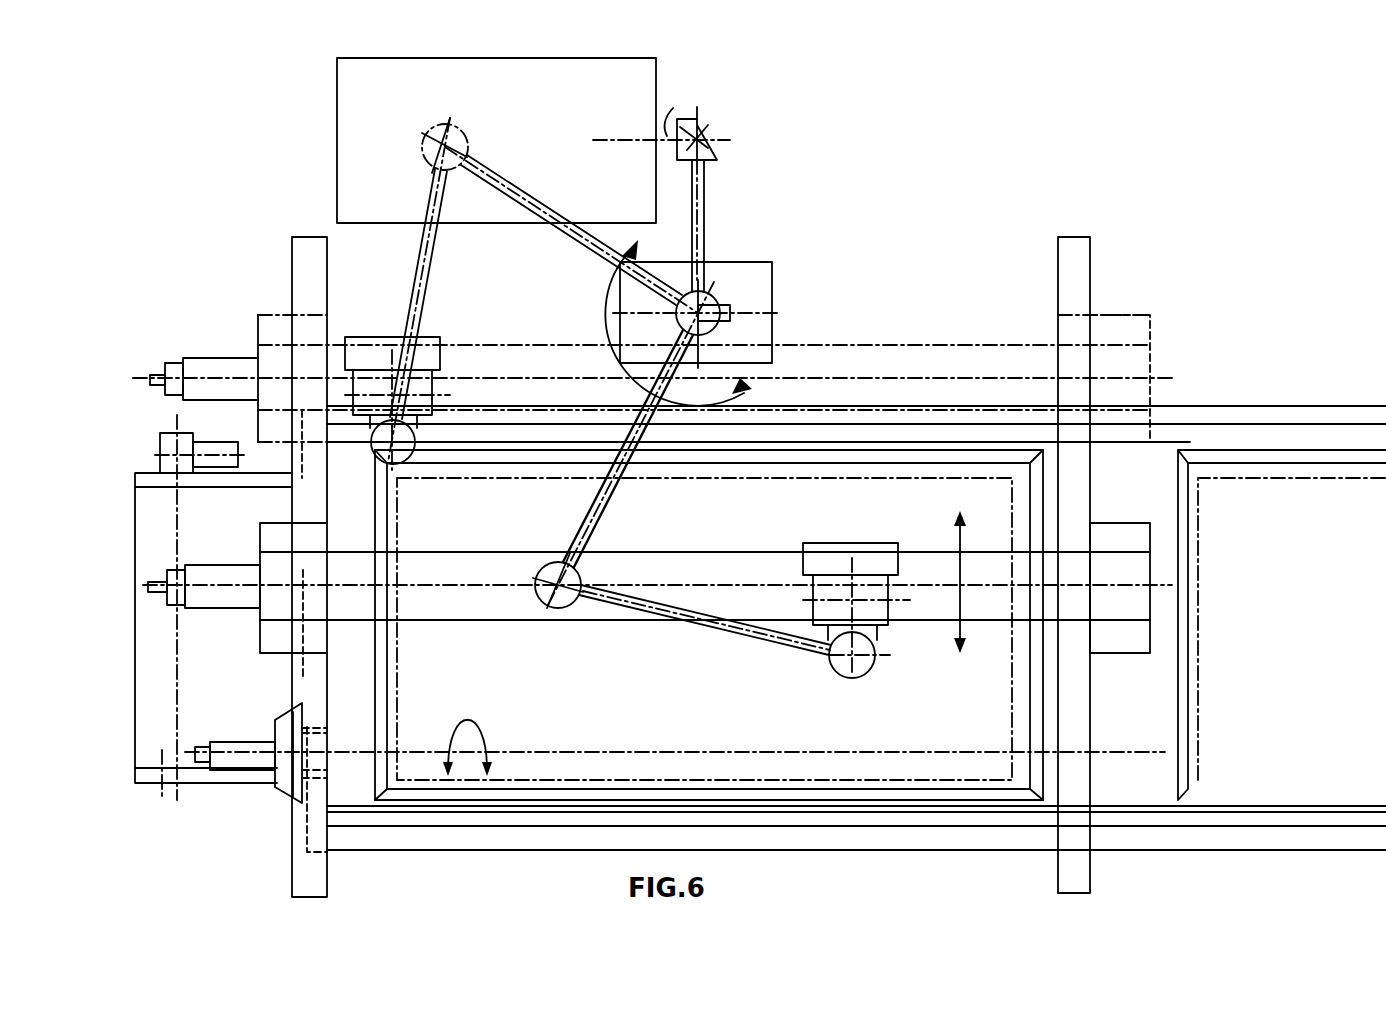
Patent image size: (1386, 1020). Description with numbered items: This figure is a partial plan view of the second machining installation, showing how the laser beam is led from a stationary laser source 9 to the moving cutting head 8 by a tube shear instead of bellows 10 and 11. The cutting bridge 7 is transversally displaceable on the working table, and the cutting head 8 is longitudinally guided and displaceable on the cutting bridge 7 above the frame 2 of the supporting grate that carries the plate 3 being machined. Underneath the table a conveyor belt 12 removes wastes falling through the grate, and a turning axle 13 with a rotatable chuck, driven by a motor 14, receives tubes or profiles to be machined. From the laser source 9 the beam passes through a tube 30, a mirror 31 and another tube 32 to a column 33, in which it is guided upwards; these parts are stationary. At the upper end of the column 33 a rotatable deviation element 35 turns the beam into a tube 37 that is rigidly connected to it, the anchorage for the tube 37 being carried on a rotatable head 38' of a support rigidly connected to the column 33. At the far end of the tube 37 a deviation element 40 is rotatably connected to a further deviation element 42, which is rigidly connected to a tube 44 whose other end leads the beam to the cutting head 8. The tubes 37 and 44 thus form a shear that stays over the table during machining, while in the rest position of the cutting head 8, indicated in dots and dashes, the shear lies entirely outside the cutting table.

The frame 2 is at (1180, 700).
The plate 3 is at (928, 796).
The cutting bridge 7 is at (728, 560).
The cutting head 8 is at (862, 668).
The laser source 9 is at (350, 95).
The bellows 10 is at (305, 263).
The bellows 11 is at (848, 432).
The conveyor belt 12 is at (213, 624).
The turning axle 13 is at (283, 778).
The motor 14 is at (247, 752).
The tube 30 is at (661, 119).
The mirror 31 is at (712, 137).
The tube 32 is at (704, 218).
The column 33 is at (660, 302).
The rotatable deviation element 35 is at (712, 305).
The tube 37 is at (620, 483).
The rotatable head 38' is at (769, 325).
The deviation element 40 is at (555, 570).
The deviation element 42 is at (560, 578).
The tube 44 is at (698, 617).